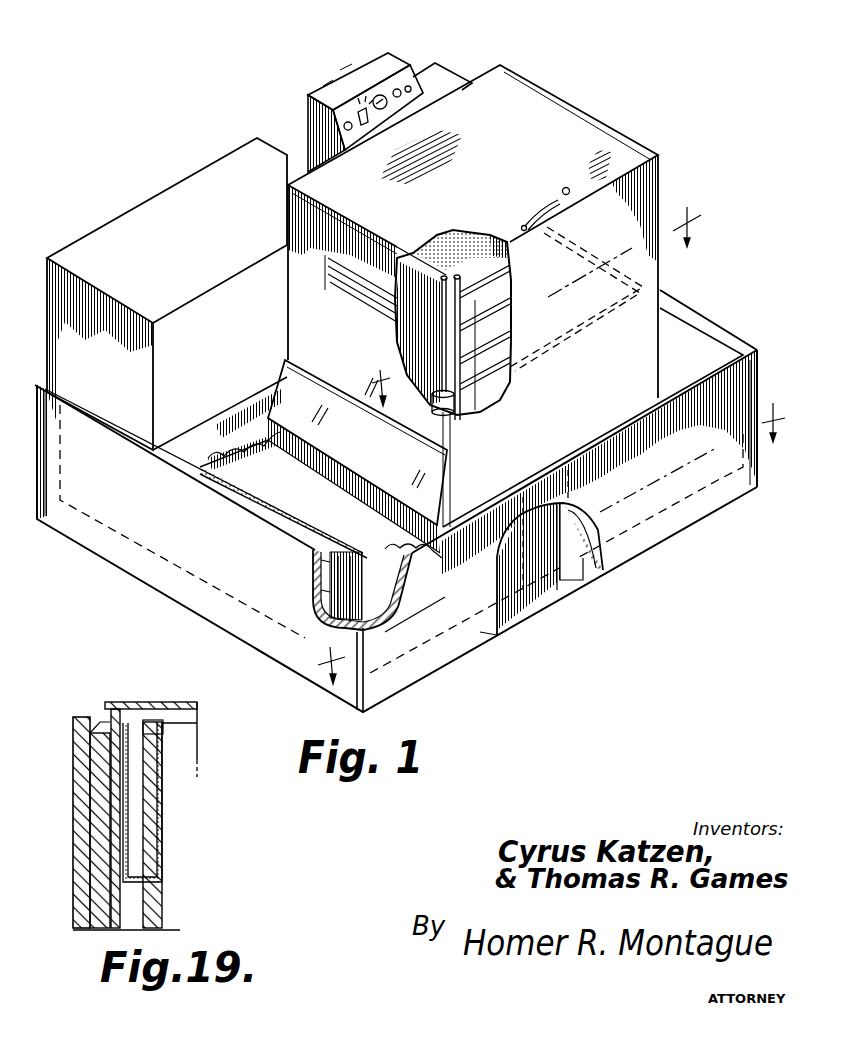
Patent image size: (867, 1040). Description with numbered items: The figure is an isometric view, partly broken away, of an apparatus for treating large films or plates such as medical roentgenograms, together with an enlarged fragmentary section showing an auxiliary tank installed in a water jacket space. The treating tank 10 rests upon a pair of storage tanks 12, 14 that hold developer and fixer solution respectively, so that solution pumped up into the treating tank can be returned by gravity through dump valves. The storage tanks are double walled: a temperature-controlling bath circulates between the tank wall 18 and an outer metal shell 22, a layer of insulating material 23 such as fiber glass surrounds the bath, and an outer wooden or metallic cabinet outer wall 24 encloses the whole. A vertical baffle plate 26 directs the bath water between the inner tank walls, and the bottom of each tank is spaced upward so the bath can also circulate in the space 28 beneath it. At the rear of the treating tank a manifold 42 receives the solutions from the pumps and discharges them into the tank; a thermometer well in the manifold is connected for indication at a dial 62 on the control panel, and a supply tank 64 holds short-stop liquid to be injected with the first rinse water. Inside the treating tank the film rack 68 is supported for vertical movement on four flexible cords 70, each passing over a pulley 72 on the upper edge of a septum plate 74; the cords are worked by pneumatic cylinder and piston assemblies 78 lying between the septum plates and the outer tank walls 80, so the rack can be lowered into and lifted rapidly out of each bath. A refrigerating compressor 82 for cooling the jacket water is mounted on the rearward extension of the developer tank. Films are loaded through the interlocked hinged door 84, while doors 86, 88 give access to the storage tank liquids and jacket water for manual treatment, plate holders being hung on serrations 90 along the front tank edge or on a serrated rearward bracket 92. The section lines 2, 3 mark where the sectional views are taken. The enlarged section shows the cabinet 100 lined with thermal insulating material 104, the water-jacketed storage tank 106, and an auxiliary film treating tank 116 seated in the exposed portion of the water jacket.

In FIG. 1, the treating tank 10 is at (411, 425).
In FIG. 1, the storage tank 12 is at (105, 552).
In FIG. 1, the storage tank 14 is at (735, 489).
In FIG. 1, the wall 18 is at (305, 516).
In FIG. 19, the wall 18 is at (150, 882).
In FIG. 1, the outer metal shell 22 is at (312, 553).
In FIG. 1, the layer of insulating material 23 is at (321, 575).
In FIG. 1, the cabinet outer wall 24 is at (314, 566).
In FIG. 1, the vertical baffle plate 26 is at (558, 577).
In FIG. 1, the space 28 is at (514, 606).
In FIG. 1, the manifold 42 is at (338, 103).
In FIG. 1, the dial 62 is at (382, 93).
In FIG. 1, the supply tank 64 is at (440, 72).
In FIG. 1, the rack 68 is at (560, 346).
In FIG. 1, the flexible cords 70 is at (500, 332).
In FIG. 1, the pulley 72 is at (463, 243).
In FIG. 1, the septum plate 74 is at (413, 265).
In FIG. 1, the pneumatic cylinder and piston assemblies 78 is at (450, 408).
In FIG. 1, the outer tank walls 80 is at (450, 251).
In FIG. 1, the refrigerating compressor 82 is at (200, 245).
In FIG. 1, the hinged door 84 is at (530, 165).
In FIG. 1, the door 86 is at (395, 470).
In FIG. 1, the door 88 is at (703, 344).
In FIG. 1, the serrations 90 is at (392, 542).
In FIG. 1, the rearward bracket 92 is at (250, 460).
In FIG. 19, the cabinet 100 is at (70, 839).
In FIG. 19, the thermal insulating material 104 is at (105, 802).
In FIG. 19, the storage tank 106 is at (210, 853).
In FIG. 1, the auxiliary film treating tank 116 is at (352, 590).
In FIG. 19, the auxiliary film treating tank 116 is at (135, 808).
In FIG. 1, the section line 2- 2 is at (543, 528).
In FIG. 1, the section line 3- 3 is at (543, 301).